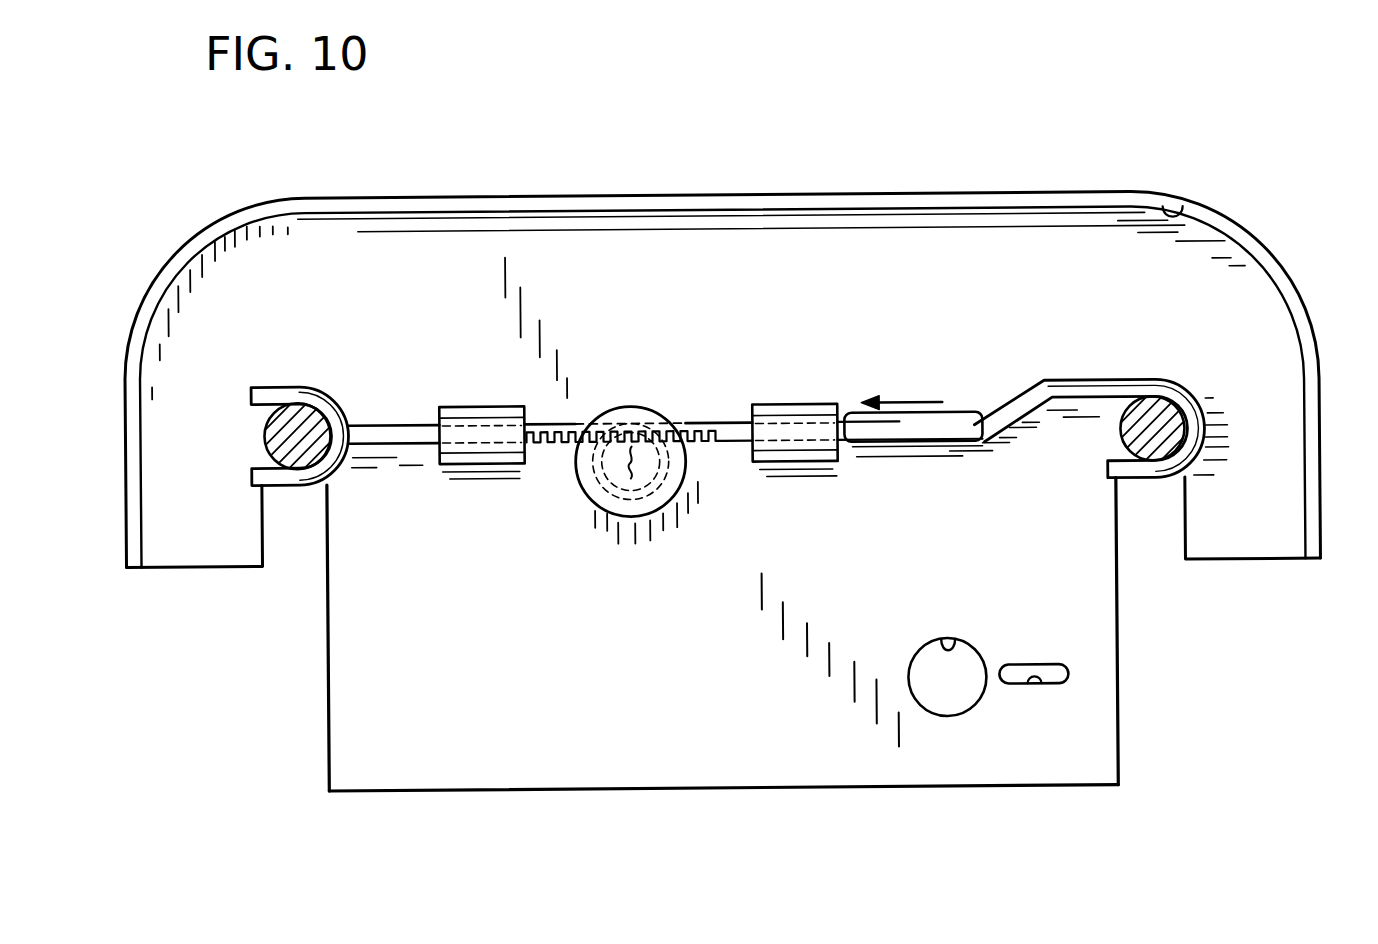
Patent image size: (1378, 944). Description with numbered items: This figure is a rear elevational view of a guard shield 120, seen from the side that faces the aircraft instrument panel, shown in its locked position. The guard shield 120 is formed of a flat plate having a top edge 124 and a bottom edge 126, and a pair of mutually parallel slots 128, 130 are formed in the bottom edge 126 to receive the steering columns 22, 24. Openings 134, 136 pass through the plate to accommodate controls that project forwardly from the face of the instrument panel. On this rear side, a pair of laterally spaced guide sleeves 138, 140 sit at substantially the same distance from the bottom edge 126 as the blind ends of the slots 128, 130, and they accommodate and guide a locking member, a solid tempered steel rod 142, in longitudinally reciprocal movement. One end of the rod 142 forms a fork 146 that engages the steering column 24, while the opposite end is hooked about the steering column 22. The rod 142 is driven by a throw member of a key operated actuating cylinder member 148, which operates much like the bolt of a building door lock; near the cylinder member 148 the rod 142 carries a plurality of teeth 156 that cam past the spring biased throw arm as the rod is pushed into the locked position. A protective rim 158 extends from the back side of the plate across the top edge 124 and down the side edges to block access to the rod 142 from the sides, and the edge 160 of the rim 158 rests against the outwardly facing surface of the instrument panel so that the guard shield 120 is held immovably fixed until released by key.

The steering column 22 is at (1181, 404).
The steering column 24 is at (258, 420).
The guard shield 120 is at (822, 172).
The top edge 124 is at (694, 197).
The bottom edge 126 is at (628, 786).
The slot 128 is at (1120, 546).
The slot 130 is at (267, 520).
The opening 134 is at (949, 646).
The opening 136 is at (1039, 686).
The guide sleeve 138 is at (488, 404).
The guide sleeve 140 is at (801, 406).
The tempered steel rod 142 is at (1011, 400).
The fork 146 is at (291, 382).
The key operated actuating cylinder member 148 is at (580, 490).
The teeth 156 is at (551, 446).
The protective rim 158 is at (1187, 207).
The edge 160 is at (1265, 247).